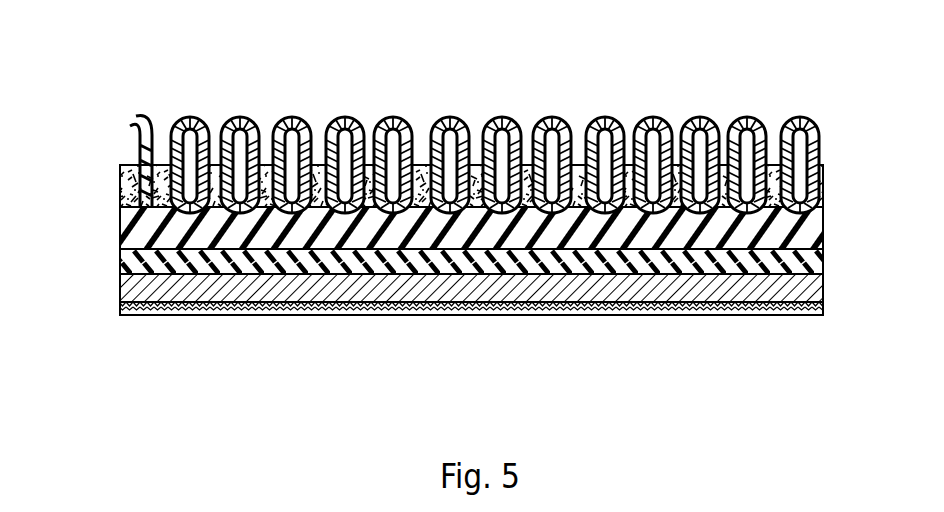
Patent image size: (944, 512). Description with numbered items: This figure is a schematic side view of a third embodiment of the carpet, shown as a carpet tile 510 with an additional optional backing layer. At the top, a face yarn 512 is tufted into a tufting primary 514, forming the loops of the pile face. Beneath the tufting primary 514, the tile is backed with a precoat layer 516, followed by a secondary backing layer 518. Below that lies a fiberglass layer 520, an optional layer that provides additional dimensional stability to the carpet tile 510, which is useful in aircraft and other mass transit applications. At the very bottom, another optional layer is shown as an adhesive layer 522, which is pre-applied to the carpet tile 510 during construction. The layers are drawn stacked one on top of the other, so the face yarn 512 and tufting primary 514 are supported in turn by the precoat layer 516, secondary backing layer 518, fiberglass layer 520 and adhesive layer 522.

The carpet tile 510 is at (127, 345).
The face yarn 512 is at (503, 117).
The tufting primary 514 is at (813, 183).
The precoat layer 516 is at (825, 222).
The secondary backing layer 518 is at (120, 262).
The fiberglass layer 520 is at (825, 298).
The adhesive layer 522 is at (427, 310).